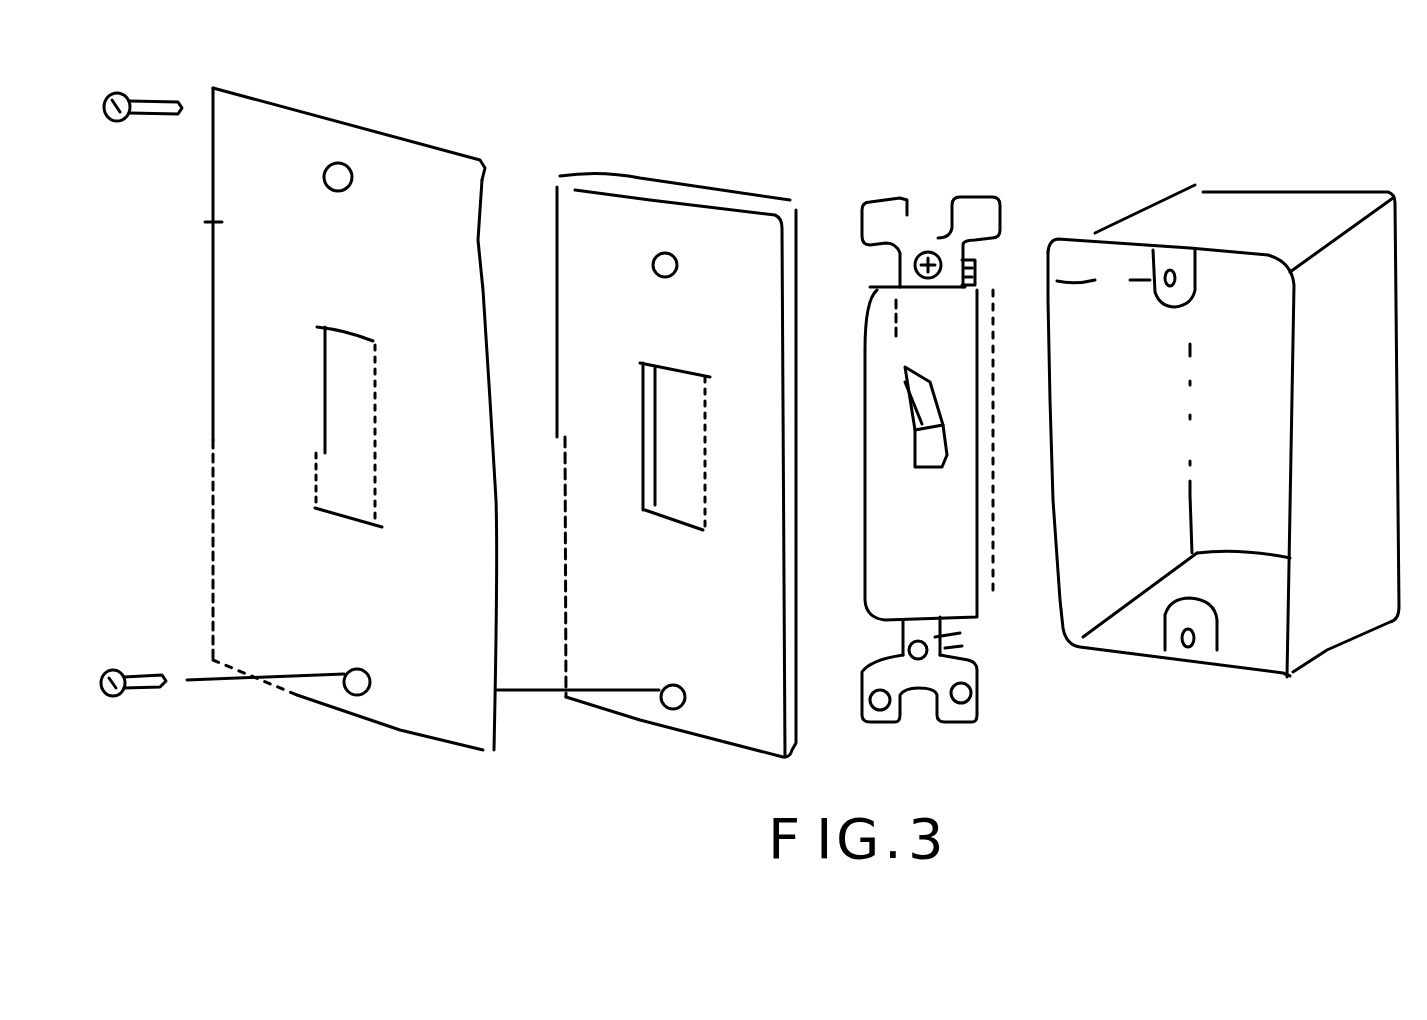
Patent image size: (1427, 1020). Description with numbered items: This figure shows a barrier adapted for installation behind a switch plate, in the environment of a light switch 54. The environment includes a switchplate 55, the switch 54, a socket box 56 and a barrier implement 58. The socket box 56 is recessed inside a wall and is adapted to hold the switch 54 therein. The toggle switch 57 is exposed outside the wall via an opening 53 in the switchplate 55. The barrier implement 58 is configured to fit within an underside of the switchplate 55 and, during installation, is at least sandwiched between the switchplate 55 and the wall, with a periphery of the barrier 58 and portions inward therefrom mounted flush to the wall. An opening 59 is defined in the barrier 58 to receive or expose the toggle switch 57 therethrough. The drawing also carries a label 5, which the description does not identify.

The electrical box 5 is at (1333, 200).
The opening 53 is at (129, 394).
The light switch 54 is at (903, 247).
The switchplate 55 is at (445, 183).
The socket box 56 is at (330, 453).
The toggle switch 57 is at (905, 384).
The barrier implement 58 is at (733, 230).
The opening 59 is at (667, 453).